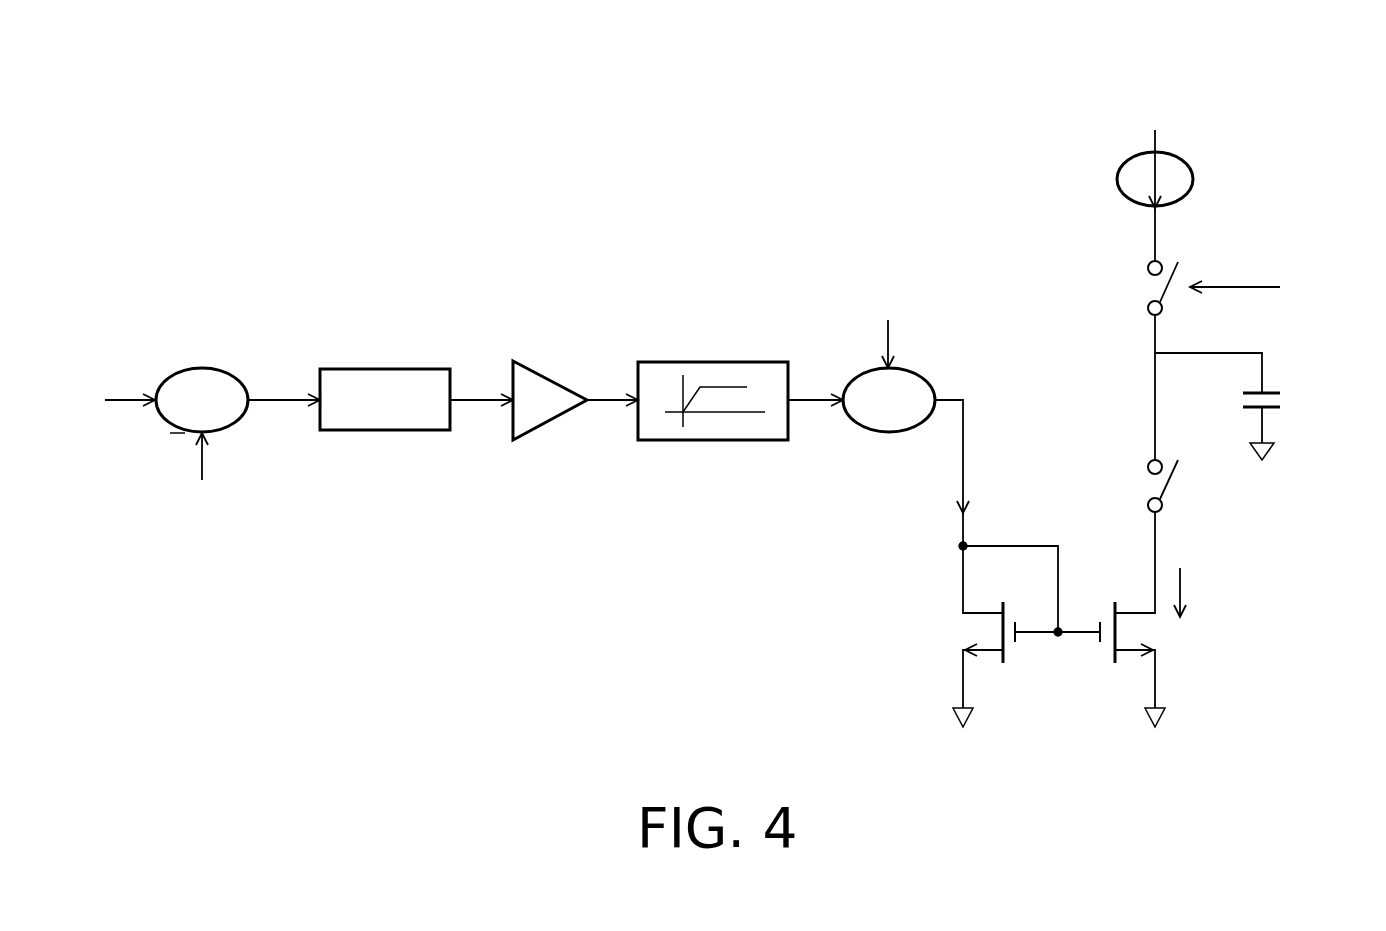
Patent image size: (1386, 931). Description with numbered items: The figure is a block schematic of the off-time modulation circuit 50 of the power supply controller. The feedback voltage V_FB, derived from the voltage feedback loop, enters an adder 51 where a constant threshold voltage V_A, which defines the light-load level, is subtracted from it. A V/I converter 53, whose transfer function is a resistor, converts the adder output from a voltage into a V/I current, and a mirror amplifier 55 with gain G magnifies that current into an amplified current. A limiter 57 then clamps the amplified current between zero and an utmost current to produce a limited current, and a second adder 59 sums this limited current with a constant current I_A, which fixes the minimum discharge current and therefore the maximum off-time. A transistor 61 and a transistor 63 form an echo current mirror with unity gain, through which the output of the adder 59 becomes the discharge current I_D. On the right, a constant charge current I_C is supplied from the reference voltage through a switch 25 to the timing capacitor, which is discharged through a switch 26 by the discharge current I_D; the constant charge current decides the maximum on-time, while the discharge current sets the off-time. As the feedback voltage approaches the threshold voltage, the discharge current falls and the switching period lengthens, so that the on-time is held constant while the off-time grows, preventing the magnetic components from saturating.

The current generation circuit 50 is at (1372, 82).
The adder 51 is at (228, 370).
The V/I converter 53 is at (408, 369).
The mirror amplifier 55 is at (558, 377).
The limiter 57 is at (741, 362).
The adder 59 is at (875, 433).
The transistor 61 is at (965, 637).
The transistor 63 is at (1153, 637).
The first switch 25 is at (1148, 290).
The second switch 26 is at (1148, 488).